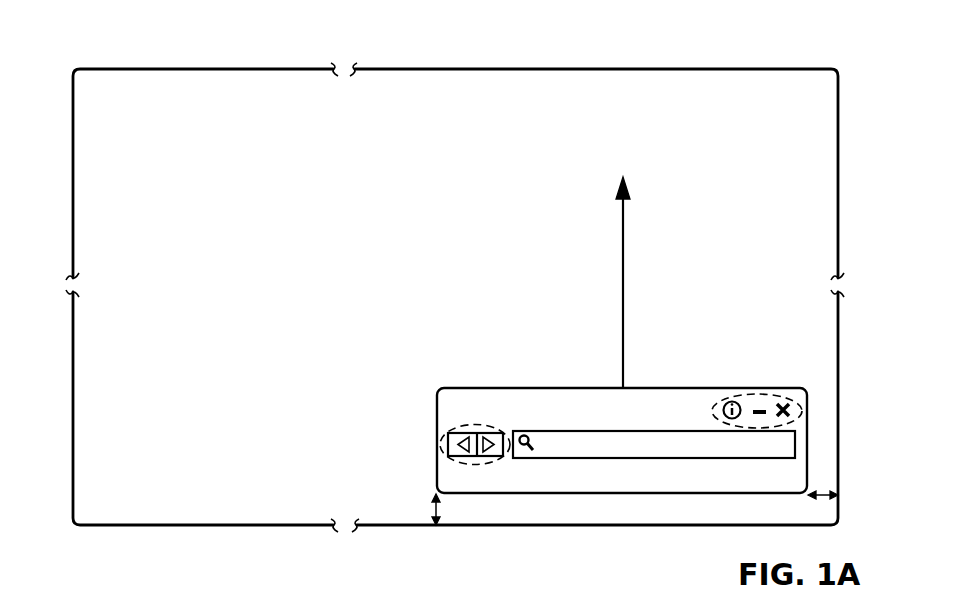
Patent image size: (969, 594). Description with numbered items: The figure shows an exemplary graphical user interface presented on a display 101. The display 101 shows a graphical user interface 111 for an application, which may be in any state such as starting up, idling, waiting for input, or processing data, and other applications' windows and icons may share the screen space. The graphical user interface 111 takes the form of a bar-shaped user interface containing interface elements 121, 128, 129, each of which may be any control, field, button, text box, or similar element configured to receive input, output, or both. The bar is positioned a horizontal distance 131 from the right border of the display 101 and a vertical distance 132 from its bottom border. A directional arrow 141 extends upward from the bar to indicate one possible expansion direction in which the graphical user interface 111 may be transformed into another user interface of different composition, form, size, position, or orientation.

The display 101 is at (110, 35).
The graphical user interface 111 is at (545, 380).
The interface element 121 is at (636, 430).
The interface element 128 is at (463, 424).
The interface element 129 is at (757, 392).
The horizontal distance 131 is at (825, 496).
The vertical distance 132 is at (434, 511).
The directional arrow 141 is at (624, 298).